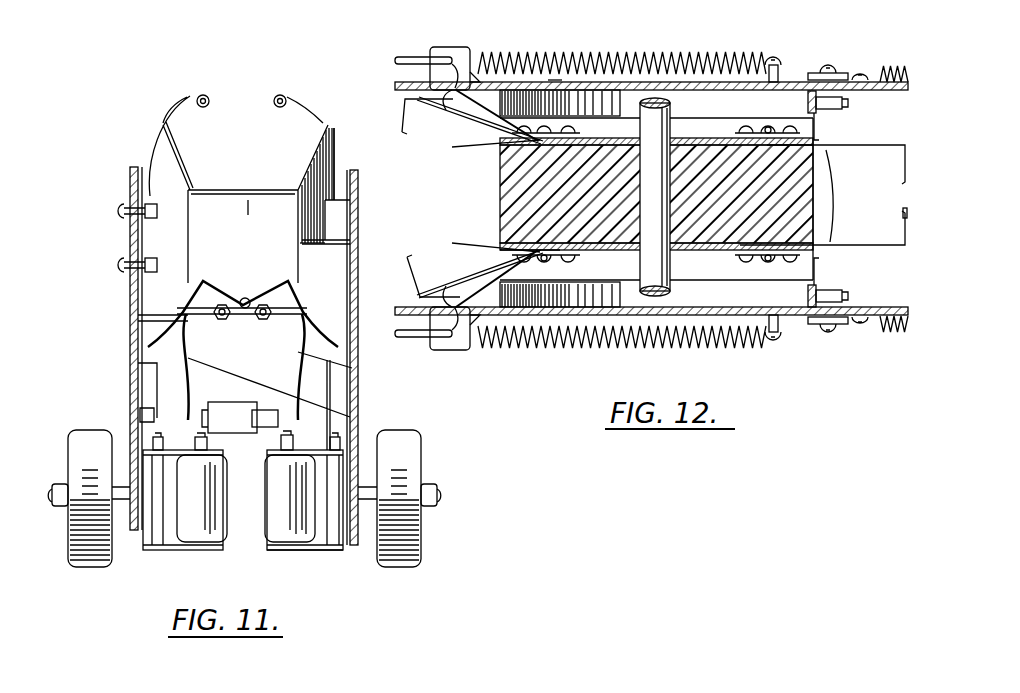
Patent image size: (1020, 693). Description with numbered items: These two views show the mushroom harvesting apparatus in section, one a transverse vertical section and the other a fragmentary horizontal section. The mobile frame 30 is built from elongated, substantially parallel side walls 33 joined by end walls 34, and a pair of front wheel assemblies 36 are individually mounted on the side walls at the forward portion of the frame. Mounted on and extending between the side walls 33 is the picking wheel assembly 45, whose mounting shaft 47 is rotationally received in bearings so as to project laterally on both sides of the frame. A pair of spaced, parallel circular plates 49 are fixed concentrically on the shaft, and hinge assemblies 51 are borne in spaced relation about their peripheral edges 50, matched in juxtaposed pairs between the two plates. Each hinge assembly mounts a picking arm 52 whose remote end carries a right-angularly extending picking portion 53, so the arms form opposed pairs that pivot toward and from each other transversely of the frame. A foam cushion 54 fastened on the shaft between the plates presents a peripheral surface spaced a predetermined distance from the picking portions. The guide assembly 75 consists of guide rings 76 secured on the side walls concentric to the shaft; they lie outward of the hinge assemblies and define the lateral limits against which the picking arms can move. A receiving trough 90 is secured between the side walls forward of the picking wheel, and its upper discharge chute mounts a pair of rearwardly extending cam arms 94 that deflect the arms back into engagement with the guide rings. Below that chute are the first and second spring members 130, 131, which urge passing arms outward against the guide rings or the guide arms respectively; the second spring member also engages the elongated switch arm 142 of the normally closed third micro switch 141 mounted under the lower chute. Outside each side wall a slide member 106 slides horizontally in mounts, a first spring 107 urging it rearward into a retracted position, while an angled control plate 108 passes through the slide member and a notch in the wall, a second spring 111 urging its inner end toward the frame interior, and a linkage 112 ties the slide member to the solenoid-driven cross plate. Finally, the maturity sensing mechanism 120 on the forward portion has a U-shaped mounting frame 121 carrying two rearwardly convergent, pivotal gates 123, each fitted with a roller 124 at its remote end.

In FIG. 11, the mobile frame 30 is at (128, 170).
In FIG. 12, the mobile frame 30 is at (393, 80).
In FIG. 11, the side walls 33 is at (138, 318).
In FIG. 12, the side walls 33 is at (873, 91).
In FIG. 11, the end walls 34 is at (333, 205).
In FIG. 11, the front wheel assemblies 36 is at (92, 445).
In FIG. 12, the picking wheel assembly 45 is at (902, 210).
In FIG. 12, the mounting shaft 47 is at (668, 128).
In FIG. 12, the circular plates 49 is at (620, 139).
In FIG. 12, the peripheral edges 50 is at (500, 172).
In FIG. 12, the hinge assemblies 51 is at (770, 130).
In FIG. 12, the picking arms 52 is at (448, 145).
In FIG. 12, the picking portion 53 is at (403, 131).
In FIG. 12, the foam cushion 54 is at (500, 187).
In FIG. 12, the guide assembly 75 is at (554, 82).
In FIG. 12, the guide rings 76 is at (598, 100).
In FIG. 11, the receiving trough 90 is at (213, 189).
In FIG. 11, the cam arms 94 is at (280, 94).
In FIG. 12, the slide member 106 is at (450, 47).
In FIG. 12, the first spring 107 is at (905, 68).
In FIG. 12, the control plate 108 is at (430, 57).
In FIG. 12, the second spring 111 is at (668, 52).
In FIG. 12, the linkage 112 is at (403, 56).
In FIG. 11, the maturity sensing mechanism 120 is at (270, 563).
In FIG. 11, the mounting frame 121 is at (140, 363).
In FIG. 11, the gates 123 is at (200, 548).
In FIG. 11, the roller 124 is at (283, 503).
In FIG. 11, the first spring member 130 is at (333, 340).
In FIG. 12, the first spring member 130 is at (442, 102).
In FIG. 11, the second spring member 131 is at (280, 395).
In FIG. 12, the second spring member 131 is at (452, 110).
In FIG. 11, the third micro switch 141 is at (242, 430).
In FIG. 11, the switch arm 142 is at (281, 414).